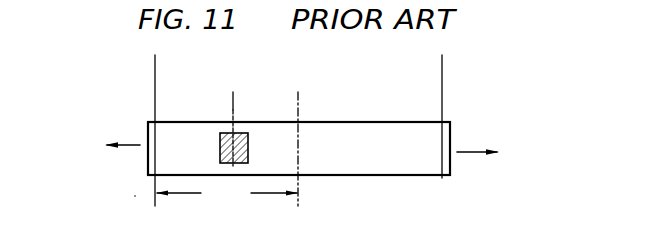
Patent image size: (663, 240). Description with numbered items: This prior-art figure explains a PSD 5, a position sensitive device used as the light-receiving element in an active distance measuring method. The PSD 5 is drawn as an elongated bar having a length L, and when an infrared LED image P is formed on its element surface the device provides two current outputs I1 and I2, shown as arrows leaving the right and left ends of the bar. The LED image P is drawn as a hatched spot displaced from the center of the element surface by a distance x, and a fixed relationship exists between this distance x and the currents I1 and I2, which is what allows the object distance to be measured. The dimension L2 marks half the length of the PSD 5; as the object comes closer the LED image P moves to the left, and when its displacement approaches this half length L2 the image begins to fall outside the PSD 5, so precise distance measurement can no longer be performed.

The PSD (Position Sensitive Device) 5 is at (365, 168).
The LED image P is at (220, 143).
The length of the PSD L is at (441, 64).
The distance from the center of the element surface to the LED image x is at (297, 100).
The half length of the PSD (L/2) L2 is at (227, 194).
The current output I1 is at (490, 153).
The current output I2 is at (111, 146).